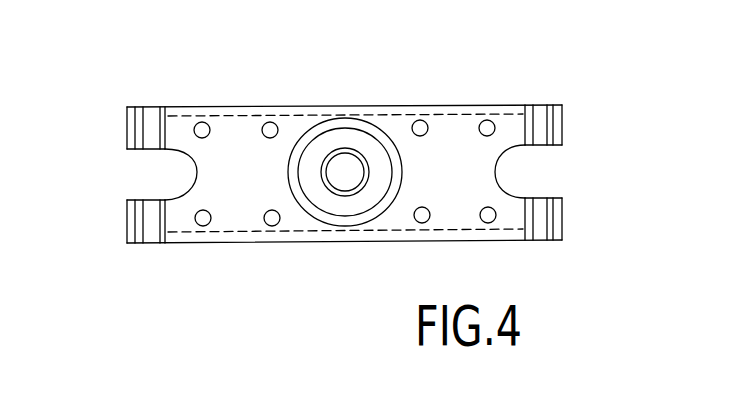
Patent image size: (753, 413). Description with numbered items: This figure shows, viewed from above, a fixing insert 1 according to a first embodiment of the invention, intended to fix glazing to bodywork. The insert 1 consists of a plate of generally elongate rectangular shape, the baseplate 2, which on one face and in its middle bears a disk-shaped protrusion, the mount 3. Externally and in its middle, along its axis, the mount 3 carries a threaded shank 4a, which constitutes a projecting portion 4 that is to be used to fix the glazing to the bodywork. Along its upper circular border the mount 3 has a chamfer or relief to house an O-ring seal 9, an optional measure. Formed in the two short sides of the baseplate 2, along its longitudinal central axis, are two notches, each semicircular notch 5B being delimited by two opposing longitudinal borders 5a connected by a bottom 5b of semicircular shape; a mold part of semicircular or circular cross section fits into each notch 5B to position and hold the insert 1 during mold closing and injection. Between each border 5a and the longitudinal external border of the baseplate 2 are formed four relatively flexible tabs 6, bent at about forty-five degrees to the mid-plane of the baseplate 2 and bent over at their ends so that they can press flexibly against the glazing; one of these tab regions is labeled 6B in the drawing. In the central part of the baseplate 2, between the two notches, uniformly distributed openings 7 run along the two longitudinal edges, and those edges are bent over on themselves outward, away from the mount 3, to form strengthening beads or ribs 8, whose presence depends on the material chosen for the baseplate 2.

The insert 1 is at (400, 97).
The baseplate 2 is at (235, 168).
The mount 3 is at (332, 137).
The projecting portion 4 is at (345, 160).
The shank 4a is at (350, 197).
The longitudinal borders 5a is at (548, 157).
The bottom 5b is at (520, 180).
The semicircular notch 5B is at (535, 167).
The flexible tabs 6 is at (543, 240).
The end flange upper part 6B is at (538, 107).
The openings 7 is at (202, 128).
The strengthening beads or ribs 8 is at (452, 115).
The O-ring seal 9 is at (300, 212).